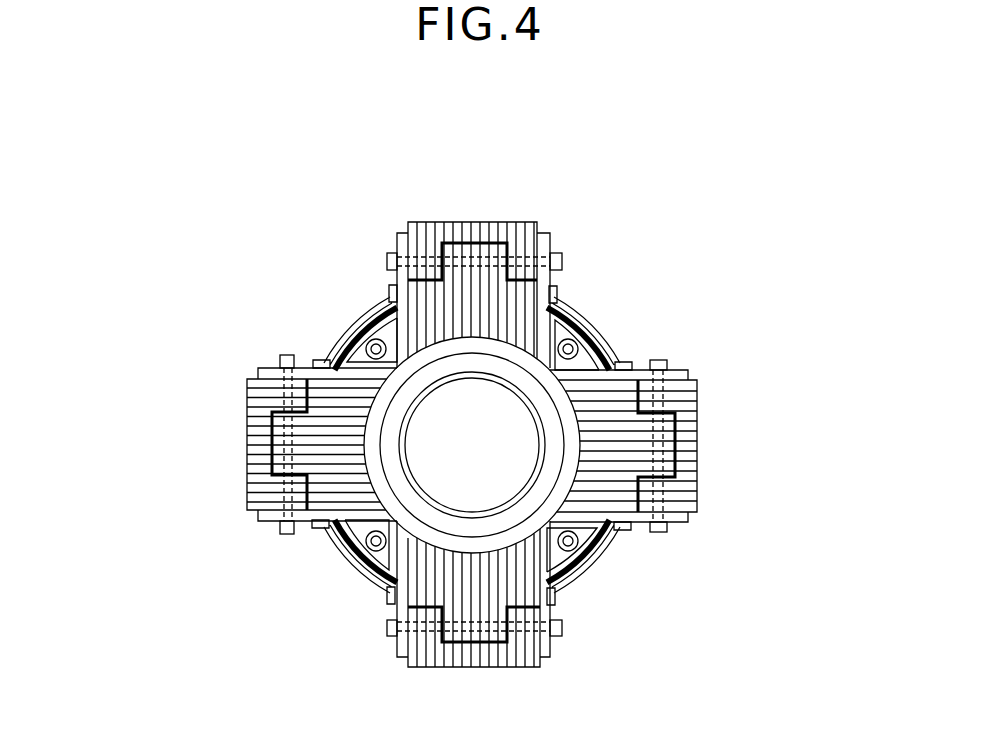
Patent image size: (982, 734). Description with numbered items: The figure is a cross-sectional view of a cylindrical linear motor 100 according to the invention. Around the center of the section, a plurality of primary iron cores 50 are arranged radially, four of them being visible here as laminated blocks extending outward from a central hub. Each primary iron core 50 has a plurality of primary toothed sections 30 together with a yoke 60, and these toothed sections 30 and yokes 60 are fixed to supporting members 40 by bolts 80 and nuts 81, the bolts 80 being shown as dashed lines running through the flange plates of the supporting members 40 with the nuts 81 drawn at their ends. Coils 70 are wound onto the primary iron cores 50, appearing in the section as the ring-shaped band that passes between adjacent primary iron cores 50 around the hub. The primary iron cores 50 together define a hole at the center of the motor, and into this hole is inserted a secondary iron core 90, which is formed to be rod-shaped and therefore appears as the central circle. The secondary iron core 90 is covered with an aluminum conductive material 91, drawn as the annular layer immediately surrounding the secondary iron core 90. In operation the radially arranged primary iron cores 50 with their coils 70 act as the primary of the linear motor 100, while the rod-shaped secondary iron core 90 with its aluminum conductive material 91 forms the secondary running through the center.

The cylindrical linear motor 100 is at (215, 410).
The primary iron core 50 is at (396, 204).
The primary toothed section 30 is at (460, 282).
The yoke 60 is at (509, 236).
The supporting member 40 is at (551, 233).
The coil 70 is at (575, 314).
The bolt 80 is at (281, 528).
The nut 81 is at (281, 356).
The secondary iron core 90 is at (433, 466).
The aluminum conductive material 91 is at (453, 523).